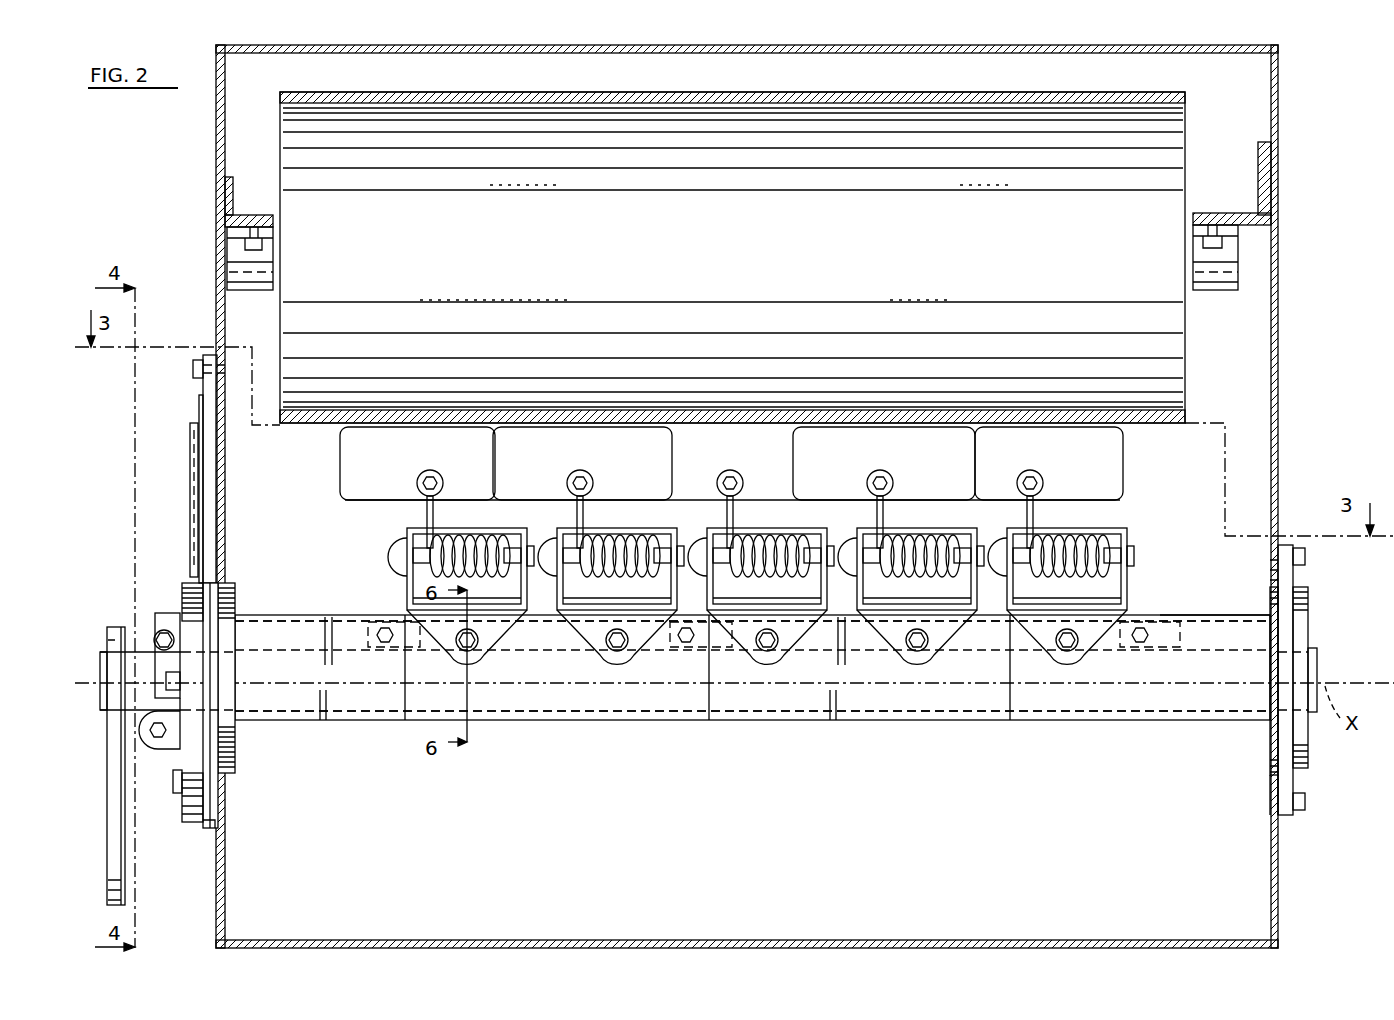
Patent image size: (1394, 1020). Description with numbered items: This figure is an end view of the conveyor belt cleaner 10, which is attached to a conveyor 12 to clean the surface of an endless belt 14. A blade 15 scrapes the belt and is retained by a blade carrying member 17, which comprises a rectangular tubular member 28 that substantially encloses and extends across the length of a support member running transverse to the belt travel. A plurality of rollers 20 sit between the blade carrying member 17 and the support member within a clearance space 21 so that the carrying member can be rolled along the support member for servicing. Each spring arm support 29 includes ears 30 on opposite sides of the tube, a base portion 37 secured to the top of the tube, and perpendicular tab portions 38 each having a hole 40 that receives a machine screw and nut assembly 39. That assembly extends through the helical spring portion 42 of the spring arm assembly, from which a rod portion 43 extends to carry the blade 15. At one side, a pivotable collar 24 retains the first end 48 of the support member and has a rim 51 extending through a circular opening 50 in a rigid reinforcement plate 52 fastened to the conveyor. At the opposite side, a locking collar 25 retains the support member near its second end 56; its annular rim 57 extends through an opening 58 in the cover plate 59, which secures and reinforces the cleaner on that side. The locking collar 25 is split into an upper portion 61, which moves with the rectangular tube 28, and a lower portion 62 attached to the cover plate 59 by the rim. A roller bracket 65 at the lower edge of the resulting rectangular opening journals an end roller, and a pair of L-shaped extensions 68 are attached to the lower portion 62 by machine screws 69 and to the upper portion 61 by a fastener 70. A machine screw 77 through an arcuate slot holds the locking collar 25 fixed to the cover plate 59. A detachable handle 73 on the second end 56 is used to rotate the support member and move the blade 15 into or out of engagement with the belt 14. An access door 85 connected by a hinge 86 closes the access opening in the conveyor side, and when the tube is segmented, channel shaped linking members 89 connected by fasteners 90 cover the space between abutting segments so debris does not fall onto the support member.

The conveyor belt cleaner 10 is at (1318, 620).
The conveyor 12 is at (1284, 103).
The endless belt 14 is at (1141, 424).
The blade 15 is at (352, 457).
The blade carrying member 17 is at (1152, 610).
The rollers 20 is at (478, 652).
The clearance space 21 is at (548, 652).
The pivotable collar 24 is at (1300, 605).
The locking collar 25 is at (232, 598).
The rectangular tubular member 28 is at (268, 622).
The spring arm support 29 is at (410, 585).
The ears 30 is at (788, 642).
The base portion 37 is at (630, 606).
The tab portions 38 is at (1140, 560).
The machine screw and nut assembly 39 is at (532, 547).
The hole 40 is at (1110, 531).
The helical spring portion 42 is at (772, 550).
The rod portion 43 is at (894, 521).
The first end 48 is at (1320, 666).
The circular opening 50 is at (1270, 572).
The rim 51 is at (1270, 595).
The reinforcement plate 52 is at (1296, 785).
The second end 56 is at (97, 660).
The annular rim 57 is at (236, 762).
The opening 58 is at (225, 395).
The cover plate 59 is at (206, 408).
The upper portion 61 is at (228, 637).
The lower portion 62 is at (228, 697).
The roller bracket 65 is at (175, 742).
The L-shaped extensions 68 is at (183, 600).
The machine screws 69 is at (170, 685).
The fastener 70 is at (153, 635).
The detachable handle 73 is at (120, 858).
The machine screw 77 is at (175, 784).
The access door 85 is at (199, 400).
The hinge 86 is at (190, 478).
The channel shaped linking members 89 is at (392, 630).
The fasteners 90 is at (384, 645).